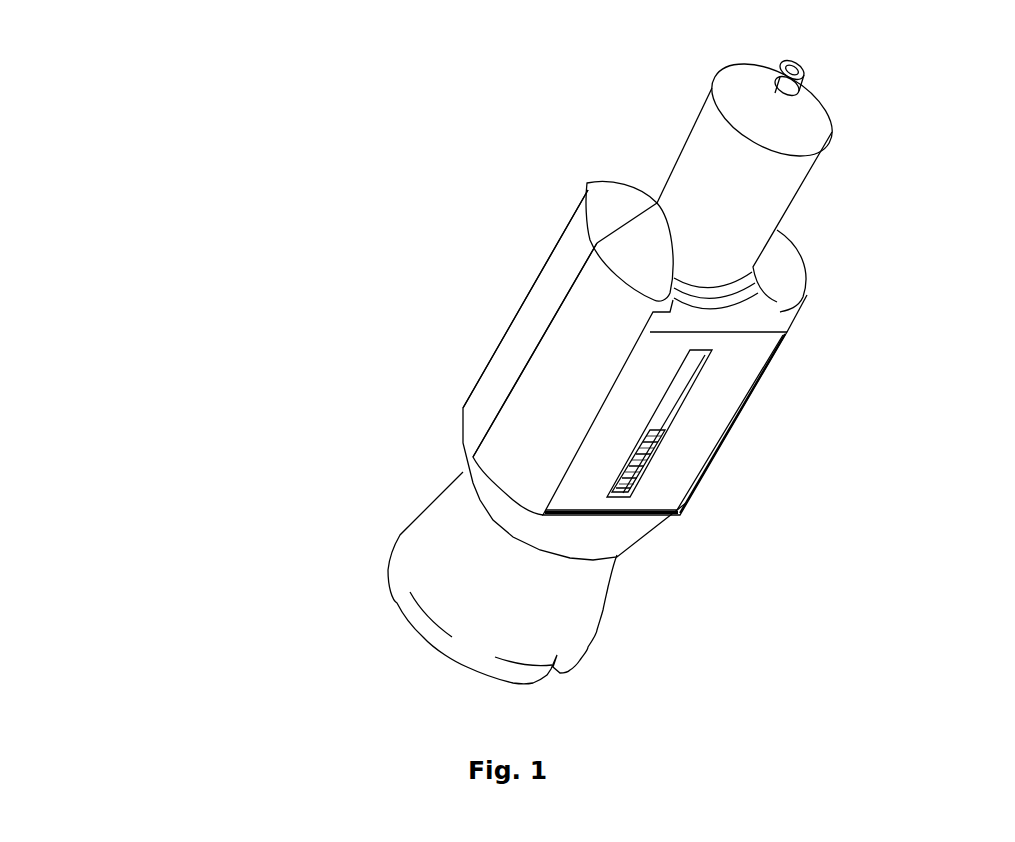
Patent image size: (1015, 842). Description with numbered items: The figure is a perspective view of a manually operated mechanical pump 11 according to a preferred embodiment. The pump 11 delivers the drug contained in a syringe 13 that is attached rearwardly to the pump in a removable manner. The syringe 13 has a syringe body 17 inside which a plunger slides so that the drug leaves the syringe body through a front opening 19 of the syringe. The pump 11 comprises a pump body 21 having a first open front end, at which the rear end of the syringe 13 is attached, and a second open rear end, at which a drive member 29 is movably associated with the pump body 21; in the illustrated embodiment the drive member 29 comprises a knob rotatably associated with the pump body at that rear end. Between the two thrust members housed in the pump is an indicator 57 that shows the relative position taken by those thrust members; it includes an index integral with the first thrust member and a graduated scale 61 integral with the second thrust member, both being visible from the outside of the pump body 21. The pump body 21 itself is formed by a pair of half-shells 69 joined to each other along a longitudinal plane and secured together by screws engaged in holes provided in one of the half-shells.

The pump 11 is at (352, 603).
The syringe 13 is at (796, 183).
The syringe body 17 is at (712, 158).
The front opening 19 is at (797, 62).
The pump body 21 is at (552, 274).
The drive member 29 is at (602, 597).
The indicator 57 is at (662, 428).
The graduated scale 61 is at (637, 482).
The half-shells 69 is at (517, 347).